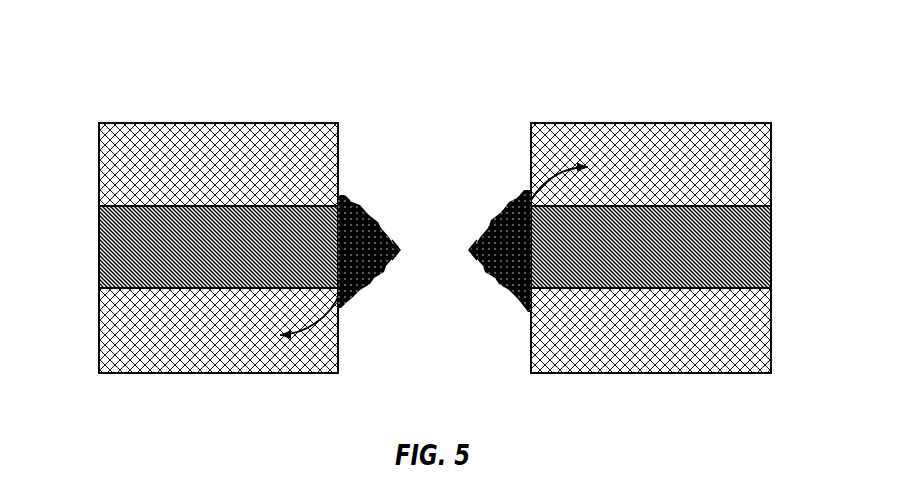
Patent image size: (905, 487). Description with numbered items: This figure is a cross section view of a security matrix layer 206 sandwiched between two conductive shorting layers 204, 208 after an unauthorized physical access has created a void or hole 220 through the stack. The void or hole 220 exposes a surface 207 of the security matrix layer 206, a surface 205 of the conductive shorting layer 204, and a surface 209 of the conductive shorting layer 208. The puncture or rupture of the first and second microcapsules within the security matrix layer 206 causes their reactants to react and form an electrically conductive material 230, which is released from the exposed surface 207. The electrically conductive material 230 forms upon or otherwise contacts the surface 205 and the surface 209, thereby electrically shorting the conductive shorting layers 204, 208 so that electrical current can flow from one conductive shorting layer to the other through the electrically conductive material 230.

The void or hole 220 is at (429, 77).
The conductive shorting layer 208 is at (120, 175).
The security matrix layer 206 is at (120, 253).
The conductive shorting layer 204 is at (113, 343).
The surface 209 is at (343, 135).
The surface 205 is at (344, 343).
The surface 207 is at (493, 297).
The electrically conductive material 230 is at (469, 222).